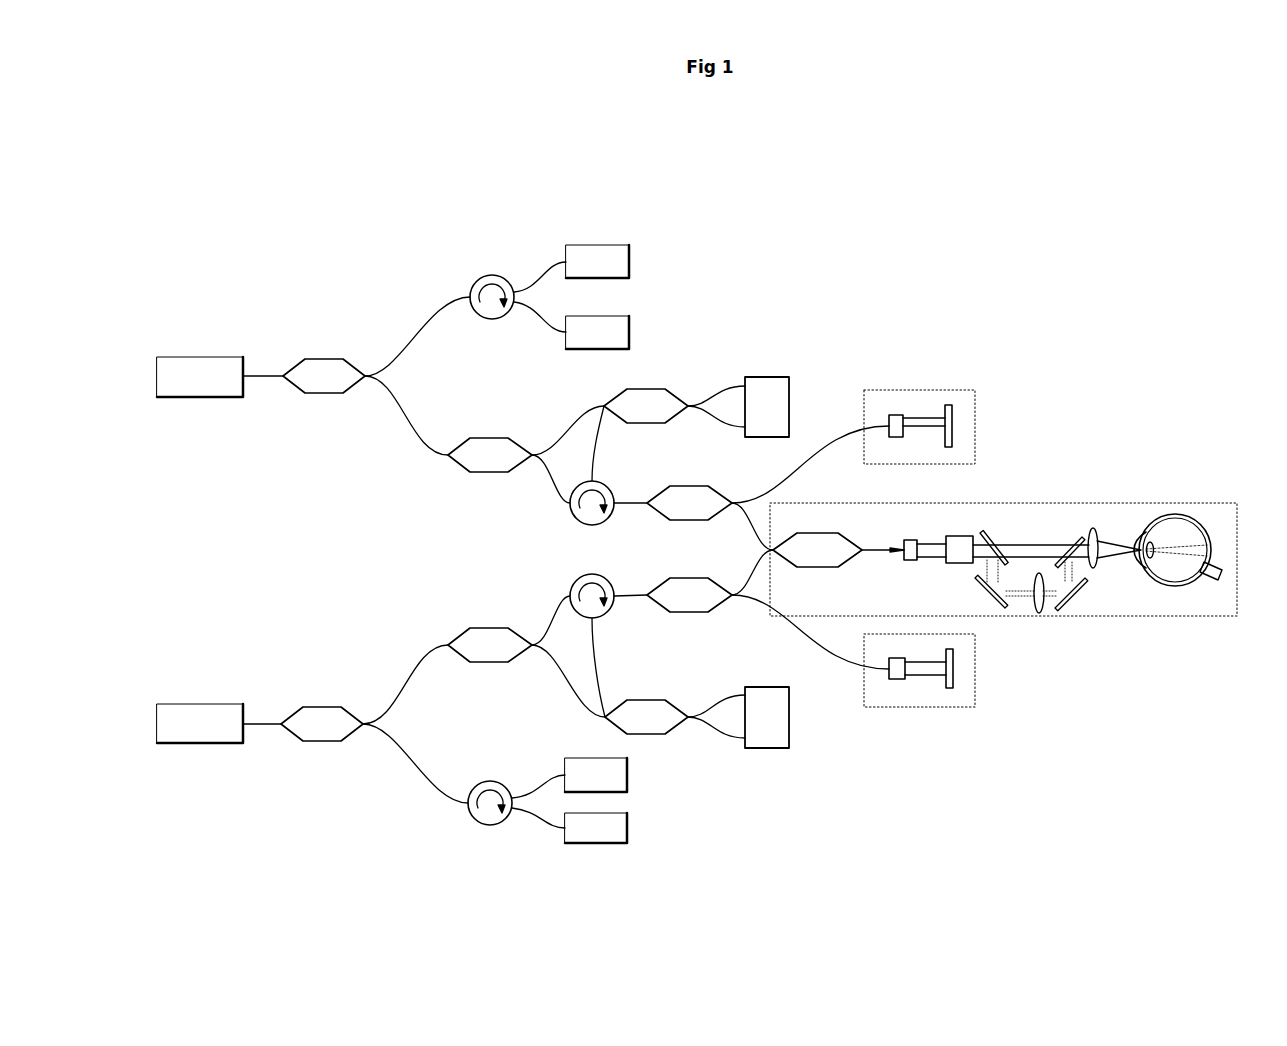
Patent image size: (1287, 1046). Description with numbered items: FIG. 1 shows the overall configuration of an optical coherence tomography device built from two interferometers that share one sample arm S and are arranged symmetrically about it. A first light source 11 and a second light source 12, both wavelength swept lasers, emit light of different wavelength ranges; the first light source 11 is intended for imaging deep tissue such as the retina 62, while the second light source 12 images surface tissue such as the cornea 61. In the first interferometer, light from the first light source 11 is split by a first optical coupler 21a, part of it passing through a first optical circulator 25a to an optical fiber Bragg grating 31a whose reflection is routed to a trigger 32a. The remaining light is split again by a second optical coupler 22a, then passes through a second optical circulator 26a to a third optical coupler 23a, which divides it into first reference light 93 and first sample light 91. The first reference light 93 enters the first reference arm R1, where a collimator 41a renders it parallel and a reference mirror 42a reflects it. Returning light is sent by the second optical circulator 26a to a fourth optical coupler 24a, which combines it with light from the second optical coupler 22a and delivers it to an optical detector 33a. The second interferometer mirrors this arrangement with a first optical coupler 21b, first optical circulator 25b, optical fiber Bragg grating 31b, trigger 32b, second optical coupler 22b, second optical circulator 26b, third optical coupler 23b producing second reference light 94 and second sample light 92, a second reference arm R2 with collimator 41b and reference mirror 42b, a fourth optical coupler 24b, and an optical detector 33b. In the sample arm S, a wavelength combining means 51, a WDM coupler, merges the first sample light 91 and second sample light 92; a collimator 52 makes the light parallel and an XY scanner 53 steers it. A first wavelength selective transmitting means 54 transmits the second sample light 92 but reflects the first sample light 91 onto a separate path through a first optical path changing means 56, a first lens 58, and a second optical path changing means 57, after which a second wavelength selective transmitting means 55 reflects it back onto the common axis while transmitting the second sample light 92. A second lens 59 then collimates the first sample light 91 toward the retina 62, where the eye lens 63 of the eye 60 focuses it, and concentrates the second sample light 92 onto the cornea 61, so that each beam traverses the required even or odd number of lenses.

The first light source 11 is at (200, 356).
The second light source 12 is at (200, 703).
The first optical coupler 21a is at (322, 359).
The first optical coupler 21b is at (320, 707).
The second optical coupler 22a is at (487, 438).
The second optical coupler 22b is at (487, 628).
The third optical coupler 23a is at (688, 486).
The third optical coupler 23b is at (692, 578).
The fourth optical coupler 24a is at (660, 389).
The fourth optical coupler 24b is at (650, 700).
The first optical circulator 25a is at (495, 275).
The first optical circulator 25b is at (493, 781).
The second optical circulator 26a is at (601, 483).
The second optical circulator 26b is at (584, 578).
The optical fiber Bragg grating 31a is at (629, 262).
The optical fiber Bragg grating 31b is at (627, 775).
The trigger 32a is at (629, 333).
The trigger 32b is at (627, 828).
The optical detector 33a is at (765, 377).
The optical detector 33b is at (760, 687).
The collimator 41a is at (895, 415).
The collimator 41b is at (897, 680).
The reference mirror 42a is at (948, 405).
The reference mirror 42b is at (950, 688).
The first reference light 93 is at (915, 418).
The second reference light 94 is at (930, 675).
The first reference arm R1 is at (975, 425).
The second reference arm R2 is at (975, 672).
The wavelength combining means 51 is at (825, 533).
The collimator 52 is at (911, 540).
The XY scanner 53 is at (958, 536).
The first wavelength selective transmitting means 54 is at (995, 535).
The second wavelength selective transmitting means 55 is at (1072, 540).
The first optical path changing means 56 is at (975, 592).
The second optical path changing means 57 is at (1080, 592).
The first lens 58 is at (1041, 614).
The second lens 59 is at (1093, 527).
The eye 60 is at (1205, 519).
The cornea 61 is at (1141, 538).
The retina 62 is at (1192, 583).
The eye lens 63 is at (1148, 574).
The first sample light 91 is at (985, 570).
The second sample light 92 is at (1013, 548).
The sample arm S is at (1192, 508).